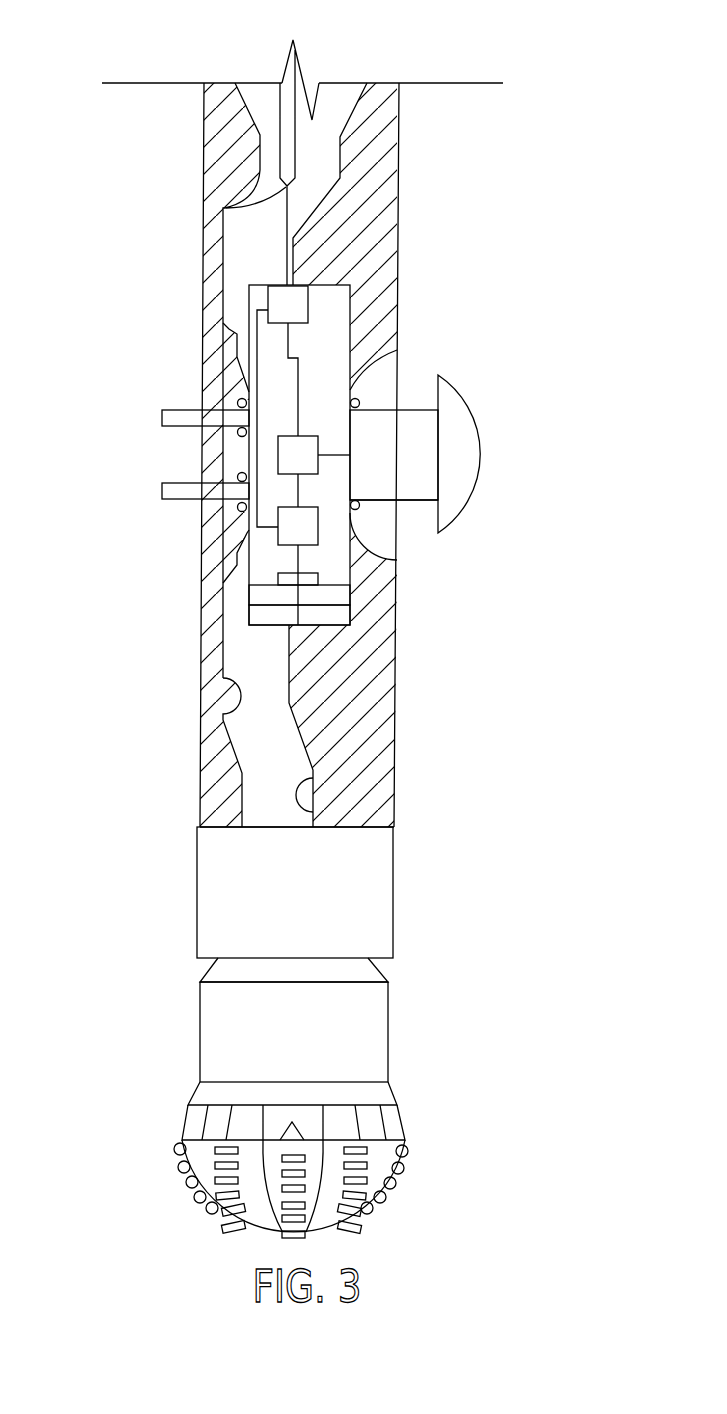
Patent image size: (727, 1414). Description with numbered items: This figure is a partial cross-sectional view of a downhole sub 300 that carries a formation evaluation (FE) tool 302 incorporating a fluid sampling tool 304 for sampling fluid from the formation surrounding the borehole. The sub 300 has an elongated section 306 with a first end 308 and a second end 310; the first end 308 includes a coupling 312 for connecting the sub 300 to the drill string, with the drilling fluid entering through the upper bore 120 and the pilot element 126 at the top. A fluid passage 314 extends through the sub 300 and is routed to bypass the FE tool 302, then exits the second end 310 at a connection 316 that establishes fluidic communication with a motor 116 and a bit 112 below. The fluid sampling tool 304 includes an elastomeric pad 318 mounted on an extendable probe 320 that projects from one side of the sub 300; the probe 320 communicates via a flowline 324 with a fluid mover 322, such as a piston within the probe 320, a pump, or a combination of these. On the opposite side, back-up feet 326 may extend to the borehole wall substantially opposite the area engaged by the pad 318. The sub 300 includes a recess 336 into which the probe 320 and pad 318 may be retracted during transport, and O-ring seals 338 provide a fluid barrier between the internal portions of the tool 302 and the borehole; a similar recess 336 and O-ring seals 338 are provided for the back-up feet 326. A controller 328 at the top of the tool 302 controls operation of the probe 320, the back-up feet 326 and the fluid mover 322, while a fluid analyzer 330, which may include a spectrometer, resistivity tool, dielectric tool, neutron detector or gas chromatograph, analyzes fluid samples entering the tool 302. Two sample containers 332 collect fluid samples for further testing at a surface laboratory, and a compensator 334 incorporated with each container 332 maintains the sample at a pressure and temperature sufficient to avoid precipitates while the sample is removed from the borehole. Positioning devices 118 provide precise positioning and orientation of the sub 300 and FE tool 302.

The bit 112 is at (185, 1123).
The motor 116 is at (197, 888).
The positioning device 118 is at (200, 1030).
The drill collar bore 120 is at (223, 207).
The pilot probe 126 is at (283, 103).
The downhole sub 300 is at (399, 118).
The FE tool 302 is at (250, 292).
The fluid sampling tool 304 is at (352, 331).
The elongated section 306 is at (397, 693).
The first end 308 is at (378, 83).
The second end 310 is at (218, 825).
The coupling 312 is at (204, 124).
The fluid passage 314 is at (237, 698).
The connection 316 is at (308, 810).
The elastomeric pad 318 is at (480, 447).
The extendable probe 320 is at (418, 500).
The fluid mover 322 is at (278, 458).
The flowline 324 is at (333, 455).
The back-up feet 326 is at (162, 490).
The controller 328 is at (308, 303).
The fluid analyzer 330 is at (257, 533).
The sample container 332 is at (330, 595).
The compensator 334 is at (330, 617).
The recess 336 is at (390, 356).
The O-ring seals 338 is at (359, 400).